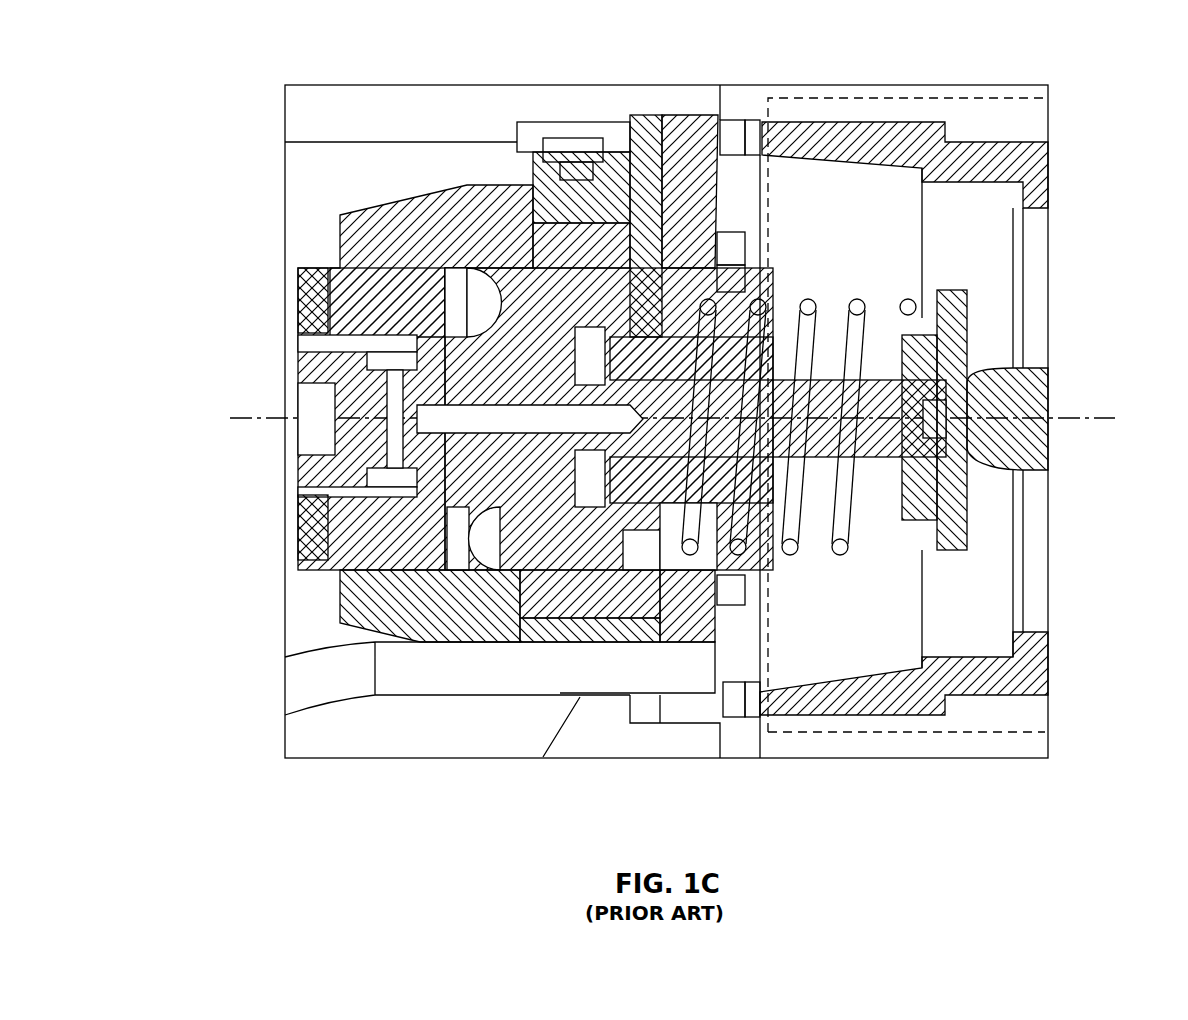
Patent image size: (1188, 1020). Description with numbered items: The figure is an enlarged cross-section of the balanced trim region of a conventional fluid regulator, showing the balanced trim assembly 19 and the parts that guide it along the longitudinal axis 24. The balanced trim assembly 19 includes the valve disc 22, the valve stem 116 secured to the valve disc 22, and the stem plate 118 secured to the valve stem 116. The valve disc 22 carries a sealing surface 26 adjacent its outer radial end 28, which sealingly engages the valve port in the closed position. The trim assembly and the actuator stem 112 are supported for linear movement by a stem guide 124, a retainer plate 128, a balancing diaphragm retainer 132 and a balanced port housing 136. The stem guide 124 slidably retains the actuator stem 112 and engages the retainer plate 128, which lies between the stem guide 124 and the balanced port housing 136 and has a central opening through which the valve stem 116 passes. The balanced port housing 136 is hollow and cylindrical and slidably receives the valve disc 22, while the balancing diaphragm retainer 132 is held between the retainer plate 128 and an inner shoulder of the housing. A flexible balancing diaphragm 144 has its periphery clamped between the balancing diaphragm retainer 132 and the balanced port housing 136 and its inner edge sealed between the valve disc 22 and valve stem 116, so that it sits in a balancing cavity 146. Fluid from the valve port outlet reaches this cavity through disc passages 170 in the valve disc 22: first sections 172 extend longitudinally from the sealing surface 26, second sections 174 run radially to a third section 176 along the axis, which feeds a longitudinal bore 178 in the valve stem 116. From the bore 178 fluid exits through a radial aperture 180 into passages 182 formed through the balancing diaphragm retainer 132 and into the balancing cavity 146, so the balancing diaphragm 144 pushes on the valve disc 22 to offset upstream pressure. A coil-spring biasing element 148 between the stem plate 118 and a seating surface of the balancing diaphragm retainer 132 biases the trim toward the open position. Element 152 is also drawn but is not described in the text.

The balanced trim assembly 19 is at (537, 333).
The valve disc 22 is at (405, 292).
The longitudinal axis 24 is at (237, 417).
The sealing surface 26 is at (298, 308).
The outer radial end 28 is at (320, 268).
The actuator stem 112 is at (1035, 470).
The valve stem 116 is at (515, 460).
The stem plate 118 is at (952, 290).
The stem guide 124 is at (1040, 668).
The retainer plate 128 is at (692, 133).
The balancing diaphragm retainer 132 is at (745, 535).
The balanced port housing 136 is at (428, 607).
The balancing diaphragm 144 is at (473, 297).
The balancing cavity 146 is at (453, 560).
The biasing element 148 is at (808, 298).
The bottom plate 152 is at (683, 682).
The disc passages 170 is at (298, 490).
The first sections 172 is at (298, 343).
The second sections 174 is at (388, 455).
The third section 176 is at (428, 415).
The longitudinal bore 178 is at (758, 298).
The radial aperture 180 is at (742, 507).
The passages 182 is at (622, 405).